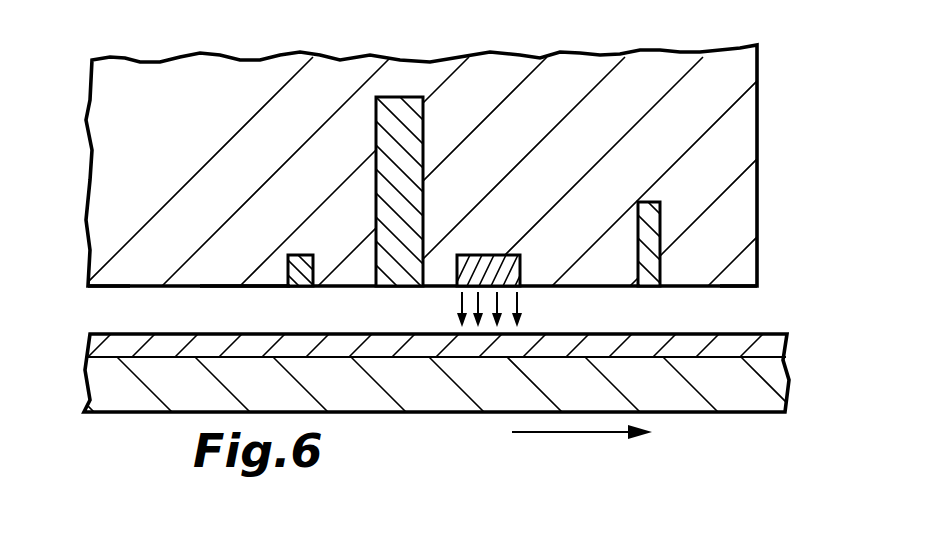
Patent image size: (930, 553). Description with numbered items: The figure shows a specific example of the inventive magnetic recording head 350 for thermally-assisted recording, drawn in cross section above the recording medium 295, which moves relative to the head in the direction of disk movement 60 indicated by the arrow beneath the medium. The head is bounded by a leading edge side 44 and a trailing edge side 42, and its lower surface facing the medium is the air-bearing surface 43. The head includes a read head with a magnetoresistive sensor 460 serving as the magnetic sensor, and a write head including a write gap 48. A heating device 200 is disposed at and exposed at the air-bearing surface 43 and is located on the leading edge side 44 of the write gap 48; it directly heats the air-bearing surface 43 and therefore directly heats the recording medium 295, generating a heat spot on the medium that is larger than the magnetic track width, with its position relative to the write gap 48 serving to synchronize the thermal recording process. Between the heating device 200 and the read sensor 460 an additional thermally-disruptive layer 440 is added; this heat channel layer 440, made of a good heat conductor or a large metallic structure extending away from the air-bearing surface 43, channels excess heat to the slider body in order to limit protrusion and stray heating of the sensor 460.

The magnetic recording head 350 is at (190, 46).
The thermally-disruptive layer 440 is at (415, 127).
The magnetoresistive sensor 460 is at (297, 255).
The heating device 200 is at (482, 257).
The write gap 48 is at (663, 212).
The leading edge side 44 is at (88, 289).
The air-bearing surface 43 is at (247, 289).
The trailing edge side 42 is at (757, 288).
The recording medium 295 is at (653, 335).
The direction of disk movement 60 is at (590, 436).